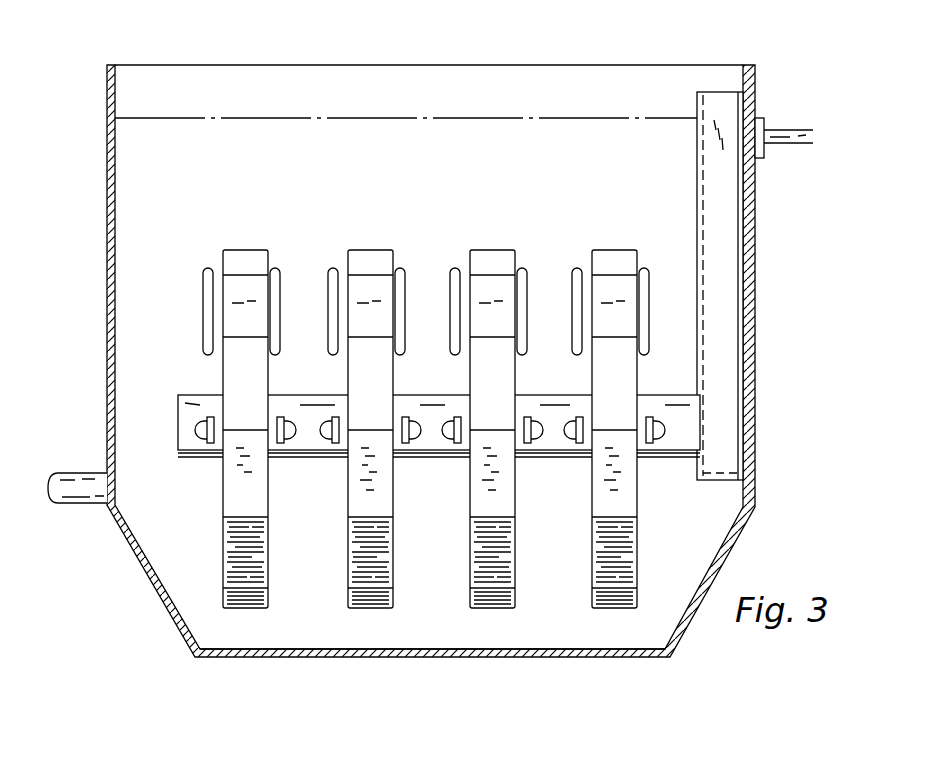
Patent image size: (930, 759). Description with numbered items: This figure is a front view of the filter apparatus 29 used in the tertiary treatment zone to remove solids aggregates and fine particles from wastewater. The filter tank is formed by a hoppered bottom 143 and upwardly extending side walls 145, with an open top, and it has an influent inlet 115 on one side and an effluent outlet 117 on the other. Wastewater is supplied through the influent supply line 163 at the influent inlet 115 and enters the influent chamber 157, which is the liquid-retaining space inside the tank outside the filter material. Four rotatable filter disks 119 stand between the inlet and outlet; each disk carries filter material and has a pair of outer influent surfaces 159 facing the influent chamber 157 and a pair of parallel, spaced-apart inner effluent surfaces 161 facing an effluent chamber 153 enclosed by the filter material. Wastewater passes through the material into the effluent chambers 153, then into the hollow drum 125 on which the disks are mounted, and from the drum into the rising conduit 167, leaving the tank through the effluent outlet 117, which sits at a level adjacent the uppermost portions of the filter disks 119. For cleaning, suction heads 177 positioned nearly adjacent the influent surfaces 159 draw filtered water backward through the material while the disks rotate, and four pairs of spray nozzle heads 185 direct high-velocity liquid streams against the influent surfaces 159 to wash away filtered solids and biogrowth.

The filter apparatus 29 is at (458, 356).
The side walls 145 is at (115, 175).
The hoppered bottom 143 is at (312, 632).
The influent chamber 157 is at (208, 557).
The rising conduit 167 is at (700, 160).
The effluent outlet 117 is at (800, 143).
The influent inlet 115 is at (107, 492).
The influent supply line 163 is at (72, 489).
The hollow drum 125 is at (178, 400).
The suction heads 177 is at (196, 437).
The rotatable filter disks 119 is at (340, 395).
The spray nozzle heads 185 is at (207, 272).
The effluent chambers 153 is at (334, 429).
The influent surfaces 159 is at (334, 429).
The effluent surfaces 161 is at (262, 478).